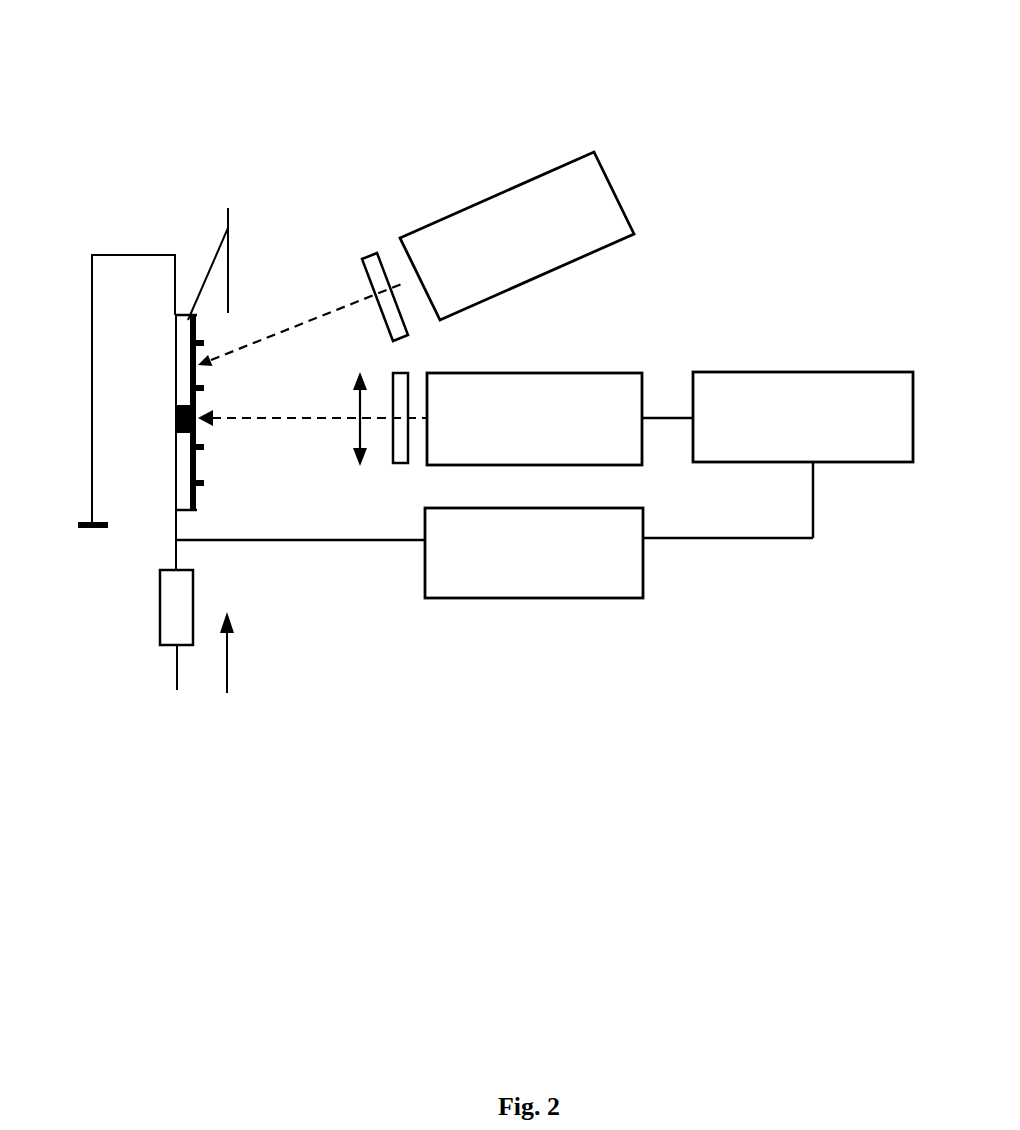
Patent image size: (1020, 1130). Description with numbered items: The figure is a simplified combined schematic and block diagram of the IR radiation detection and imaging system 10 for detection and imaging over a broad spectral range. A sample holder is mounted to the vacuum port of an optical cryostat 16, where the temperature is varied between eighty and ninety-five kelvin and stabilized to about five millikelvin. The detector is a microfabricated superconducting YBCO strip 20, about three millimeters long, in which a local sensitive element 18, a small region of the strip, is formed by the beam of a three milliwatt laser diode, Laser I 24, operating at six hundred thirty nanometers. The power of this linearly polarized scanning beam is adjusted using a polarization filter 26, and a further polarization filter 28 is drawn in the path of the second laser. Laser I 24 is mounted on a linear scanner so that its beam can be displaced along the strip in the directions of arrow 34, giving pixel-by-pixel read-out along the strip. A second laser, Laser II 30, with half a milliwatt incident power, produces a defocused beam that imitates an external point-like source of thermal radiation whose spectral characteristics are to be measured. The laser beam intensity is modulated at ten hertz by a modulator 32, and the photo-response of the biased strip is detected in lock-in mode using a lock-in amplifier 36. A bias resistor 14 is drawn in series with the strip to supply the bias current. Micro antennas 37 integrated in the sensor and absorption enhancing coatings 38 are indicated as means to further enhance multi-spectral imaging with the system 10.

The IR radiation detection and imaging system 10 is at (337, 150).
The bias resistor 14 is at (176, 612).
The optical cryostat 16 is at (100, 253).
The local sensitive element 18 is at (176, 428).
The YBCO strip 20 is at (183, 330).
The laser diode (Laser I) 24 is at (632, 453).
The polarization filter 26 is at (400, 452).
The polarization filter 28 is at (367, 257).
The second laser (Laser II) 30 is at (588, 248).
The modulator 32 is at (885, 456).
The arrow 34 is at (355, 405).
The lock-in amplifier 36 is at (632, 580).
The micro antennas 37 is at (197, 332).
The absorption enhancing coatings 38 is at (193, 313).